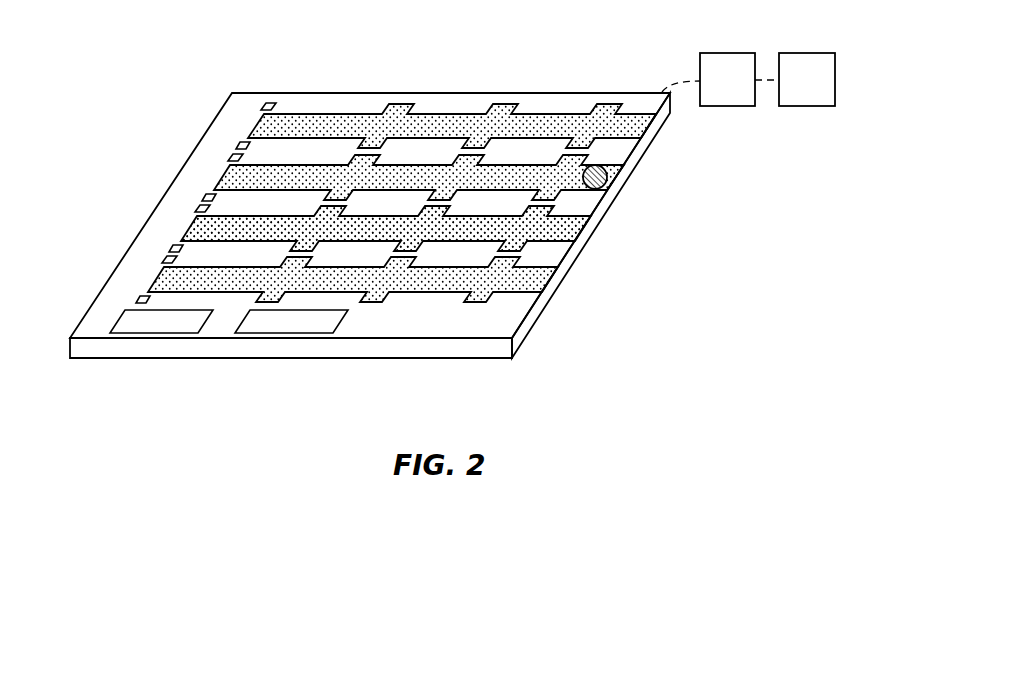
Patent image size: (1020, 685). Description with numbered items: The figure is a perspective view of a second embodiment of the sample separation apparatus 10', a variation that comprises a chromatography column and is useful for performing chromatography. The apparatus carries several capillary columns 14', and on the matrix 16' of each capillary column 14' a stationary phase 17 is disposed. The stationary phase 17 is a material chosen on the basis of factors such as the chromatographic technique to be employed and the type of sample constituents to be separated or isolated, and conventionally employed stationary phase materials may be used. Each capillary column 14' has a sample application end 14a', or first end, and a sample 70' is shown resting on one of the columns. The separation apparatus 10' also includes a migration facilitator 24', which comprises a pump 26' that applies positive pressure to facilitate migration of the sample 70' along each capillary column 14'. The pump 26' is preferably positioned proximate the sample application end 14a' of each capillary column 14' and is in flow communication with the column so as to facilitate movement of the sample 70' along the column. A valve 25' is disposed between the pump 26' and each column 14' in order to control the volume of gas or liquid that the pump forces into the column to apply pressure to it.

The sample separation apparatus 10' is at (413, 225).
The capillary column 14' is at (401, 300).
The sample application end 14a' is at (507, 131).
The matrix 16' is at (451, 231).
The stationary phase 17 is at (571, 224).
The sample 70' is at (479, 177).
The migration facilitator 24' is at (778, 62).
The valve 25' is at (727, 79).
The pump 26' is at (807, 79).